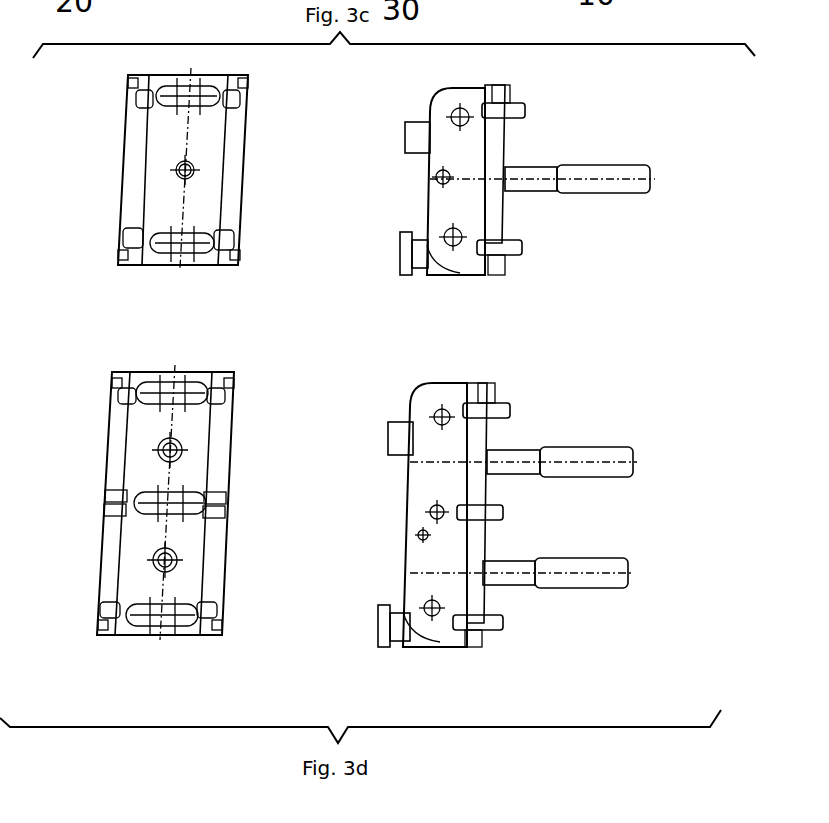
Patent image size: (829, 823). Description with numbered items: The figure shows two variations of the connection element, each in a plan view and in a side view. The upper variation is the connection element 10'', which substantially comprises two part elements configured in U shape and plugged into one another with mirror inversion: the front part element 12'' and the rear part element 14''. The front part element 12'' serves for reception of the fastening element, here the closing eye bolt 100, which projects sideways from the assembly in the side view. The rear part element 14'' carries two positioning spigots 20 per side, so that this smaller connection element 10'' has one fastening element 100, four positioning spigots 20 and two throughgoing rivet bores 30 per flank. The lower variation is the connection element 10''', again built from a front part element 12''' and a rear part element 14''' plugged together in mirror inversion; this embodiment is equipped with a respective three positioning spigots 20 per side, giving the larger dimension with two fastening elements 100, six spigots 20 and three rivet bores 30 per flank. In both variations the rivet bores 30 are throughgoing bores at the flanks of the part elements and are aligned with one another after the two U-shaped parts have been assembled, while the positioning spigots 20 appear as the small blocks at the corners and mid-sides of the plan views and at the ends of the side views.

In FIG. 3c, the connection element 10'' is at (340, 184).
In FIG. 3d, the connection element 10''' is at (327, 521).
In FIG. 3c, the front part element 12'' is at (362, 170).
In FIG. 3d, the front part element 12''' is at (351, 503).
In FIG. 3c, the rear part element 14'' is at (379, 253).
In FIG. 3d, the rear part element 14''' is at (358, 626).
In FIG. 3c, the positioning spigot 20 is at (133, 93).
In FIG. 3d, the positioning spigot 20 is at (113, 392).
In FIG. 3c, the rivet bore 30 is at (458, 115).
In FIG. 3d, the rivet bore 30 is at (440, 410).
In FIG. 3c, the closing eye bolt 100 is at (617, 180).
In FIG. 3d, the closing eye bolt 100 is at (610, 458).